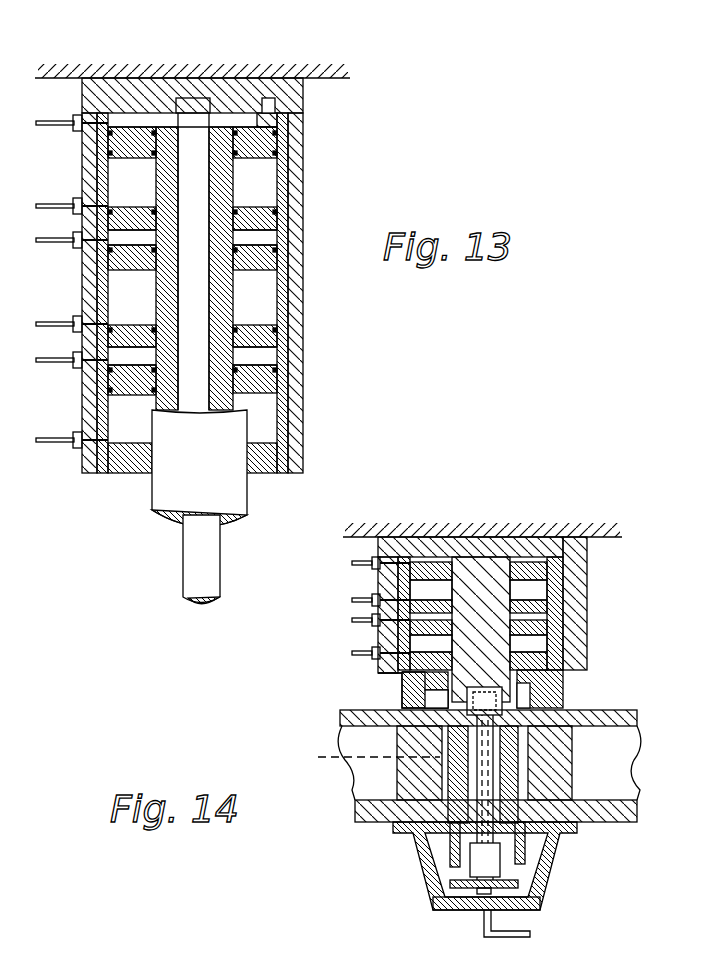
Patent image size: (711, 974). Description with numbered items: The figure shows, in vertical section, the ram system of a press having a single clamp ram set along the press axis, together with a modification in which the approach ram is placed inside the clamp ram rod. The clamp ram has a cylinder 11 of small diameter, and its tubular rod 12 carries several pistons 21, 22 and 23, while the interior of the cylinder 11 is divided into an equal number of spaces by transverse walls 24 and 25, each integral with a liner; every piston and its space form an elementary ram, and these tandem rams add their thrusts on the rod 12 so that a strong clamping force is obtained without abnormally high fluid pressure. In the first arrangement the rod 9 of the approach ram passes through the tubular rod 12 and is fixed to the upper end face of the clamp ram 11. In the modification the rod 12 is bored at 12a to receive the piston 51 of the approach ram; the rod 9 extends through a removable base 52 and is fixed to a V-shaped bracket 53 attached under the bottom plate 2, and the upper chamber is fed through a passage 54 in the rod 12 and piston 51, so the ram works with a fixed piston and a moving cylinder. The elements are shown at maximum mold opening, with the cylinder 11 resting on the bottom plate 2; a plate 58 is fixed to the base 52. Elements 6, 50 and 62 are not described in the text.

In FIG. 14, the bottom plate 2 is at (630, 712).
In FIG. 13, the ceiling / fixed support 6 is at (322, 79).
In FIG. 14, the ceiling / fixed support 6 is at (603, 537).
In FIG. 13, the rod of approach ram 9 is at (192, 386).
In FIG. 14, the rod of approach ram 9 is at (494, 768).
In FIG. 13, the cylinder of clamp ram 11 is at (297, 252).
In FIG. 14, the cylinder of clamp ram 11 is at (578, 600).
In FIG. 13, the rod of clamp ram 12 is at (150, 512).
In FIG. 14, the rod of clamp ram 12 is at (400, 698).
In FIG. 14, the bore 12a is at (345, 737).
In FIG. 13, the piston 21 is at (257, 112).
In FIG. 13, the piston 22 is at (125, 275).
In FIG. 13, the piston 23 is at (130, 390).
In FIG. 13, the transverse wall 24 is at (130, 210).
In FIG. 13, the transverse wall 25 is at (255, 320).
In FIG. 14, the support 50 is at (378, 703).
In FIG. 14, the piston of approach ram 51 is at (505, 705).
In FIG. 14, the removable base 52 is at (468, 900).
In FIG. 14, the V-shaped bracket 53 is at (550, 857).
In FIG. 14, the passage 54 is at (365, 762).
In FIG. 14, the plate 58 is at (517, 893).
In FIG. 14, the sleeve 62 is at (452, 850).